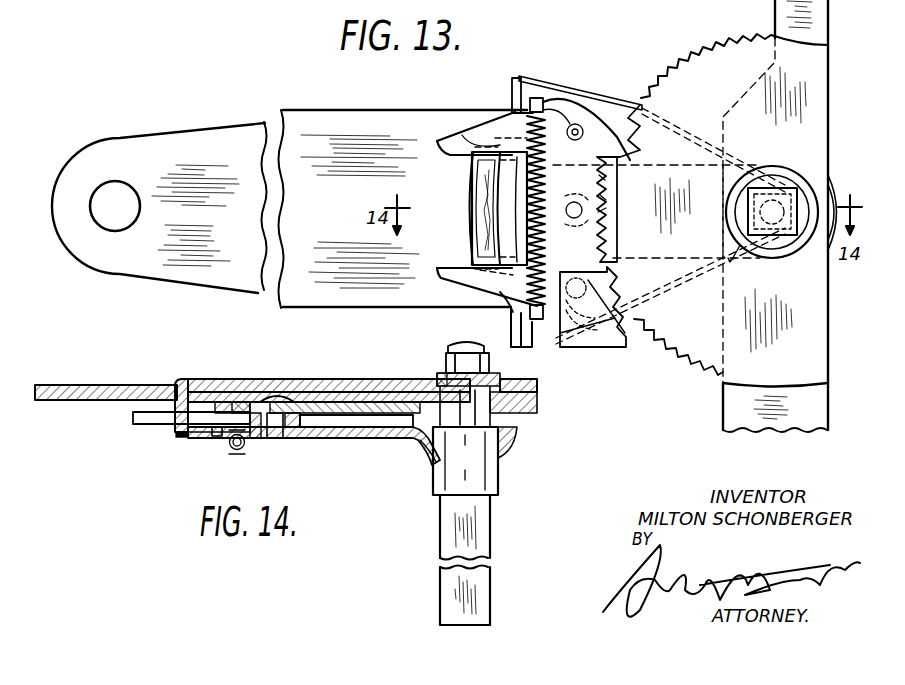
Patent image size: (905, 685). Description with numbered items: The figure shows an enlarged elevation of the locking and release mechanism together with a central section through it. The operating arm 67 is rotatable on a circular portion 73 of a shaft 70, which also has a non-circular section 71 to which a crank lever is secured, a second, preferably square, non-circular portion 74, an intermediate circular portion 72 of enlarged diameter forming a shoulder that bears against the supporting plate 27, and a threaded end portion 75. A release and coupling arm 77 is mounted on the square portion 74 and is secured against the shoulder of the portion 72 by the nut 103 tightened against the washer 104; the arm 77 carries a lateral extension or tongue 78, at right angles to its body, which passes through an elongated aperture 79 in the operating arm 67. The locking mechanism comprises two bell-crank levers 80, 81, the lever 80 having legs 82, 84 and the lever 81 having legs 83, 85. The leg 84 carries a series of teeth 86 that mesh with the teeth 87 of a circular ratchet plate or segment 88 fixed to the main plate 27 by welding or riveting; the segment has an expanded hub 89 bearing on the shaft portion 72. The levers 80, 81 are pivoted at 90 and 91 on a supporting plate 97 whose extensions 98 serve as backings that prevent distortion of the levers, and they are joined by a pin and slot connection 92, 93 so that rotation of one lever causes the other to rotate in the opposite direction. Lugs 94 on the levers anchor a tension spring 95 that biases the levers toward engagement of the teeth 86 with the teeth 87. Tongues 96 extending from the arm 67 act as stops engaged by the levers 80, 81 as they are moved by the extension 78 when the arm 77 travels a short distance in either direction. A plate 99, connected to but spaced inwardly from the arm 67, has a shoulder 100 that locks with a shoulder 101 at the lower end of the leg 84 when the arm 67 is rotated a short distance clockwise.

In FIG. 13, the supporting plate 27 is at (722, 402).
In FIG. 14, the supporting plate 27 is at (516, 428).
In FIG. 13, the operating arm 67 is at (388, 118).
In FIG. 14, the operating arm 67 is at (96, 386).
In FIG. 14, the shaft 70 is at (492, 548).
In FIG. 13, the non-circular section 71 is at (738, 263).
In FIG. 14, the non-circular section 71 is at (450, 600).
In FIG. 13, the intermediate circular portion 72 is at (780, 168).
In FIG. 14, the intermediate circular portion 72 is at (498, 478).
In FIG. 14, the circular portion 73 is at (520, 410).
In FIG. 14, the second non-circular portion 74 is at (438, 380).
In FIG. 14, the threaded end portion 75 is at (460, 352).
In FIG. 13, the release and coupling arm 77 is at (703, 258).
In FIG. 14, the release and coupling arm 77 is at (329, 384).
In FIG. 13, the lateral extension or tongue 78 is at (478, 205).
In FIG. 14, the lateral extension or tongue 78 is at (180, 437).
In FIG. 13, the elongated aperture 79 is at (476, 235).
In FIG. 14, the elongated aperture 79 is at (180, 380).
In FIG. 13, the bell-crank lever 80 is at (448, 137).
In FIG. 13, the bell-crank lever 81 is at (443, 283).
In FIG. 14, the bell-crank lever 81 is at (133, 420).
In FIG. 13, the leg 82 is at (464, 140).
In FIG. 13, the leg 83 is at (583, 347).
In FIG. 13, the leg 84 is at (580, 138).
In FIG. 14, the leg 84 is at (328, 428).
In FIG. 13, the leg 85 is at (607, 212).
In FIG. 14, the leg 85 is at (258, 440).
In FIG. 13, the teeth 86 is at (612, 242).
In FIG. 13, the teeth 87 is at (648, 114).
In FIG. 13, the circular ratchet plate or segment 88 is at (734, 193).
In FIG. 14, the circular ratchet plate or segment 88 is at (366, 440).
In FIG. 14, the expanded hub 89 is at (422, 456).
In FIG. 13, the pivot 90 is at (578, 124).
In FIG. 13, the pivot 91 is at (620, 292).
In FIG. 13, the pin 92 is at (603, 204).
In FIG. 14, the pin 92 is at (283, 437).
In FIG. 13, the slot 93 is at (607, 185).
In FIG. 13, the lugs 94 is at (537, 98).
In FIG. 13, the tension spring 95 is at (572, 217).
In FIG. 14, the tension spring 95 is at (237, 451).
In FIG. 13, the tongues 96 is at (516, 78).
In FIG. 14, the tongues 96 is at (212, 440).
In FIG. 13, the supporting plate 97 is at (633, 336).
In FIG. 14, the supporting plate 97 is at (258, 400).
In FIG. 13, the extensions 98 is at (501, 137).
In FIG. 14, the extensions 98 is at (220, 400).
In FIG. 13, the plate 99 is at (618, 346).
In FIG. 13, the shoulder 100 is at (622, 272).
In FIG. 13, the shoulder 101 is at (580, 266).
In FIG. 14, the nut 103 is at (446, 360).
In FIG. 14, the washer 104 is at (492, 380).